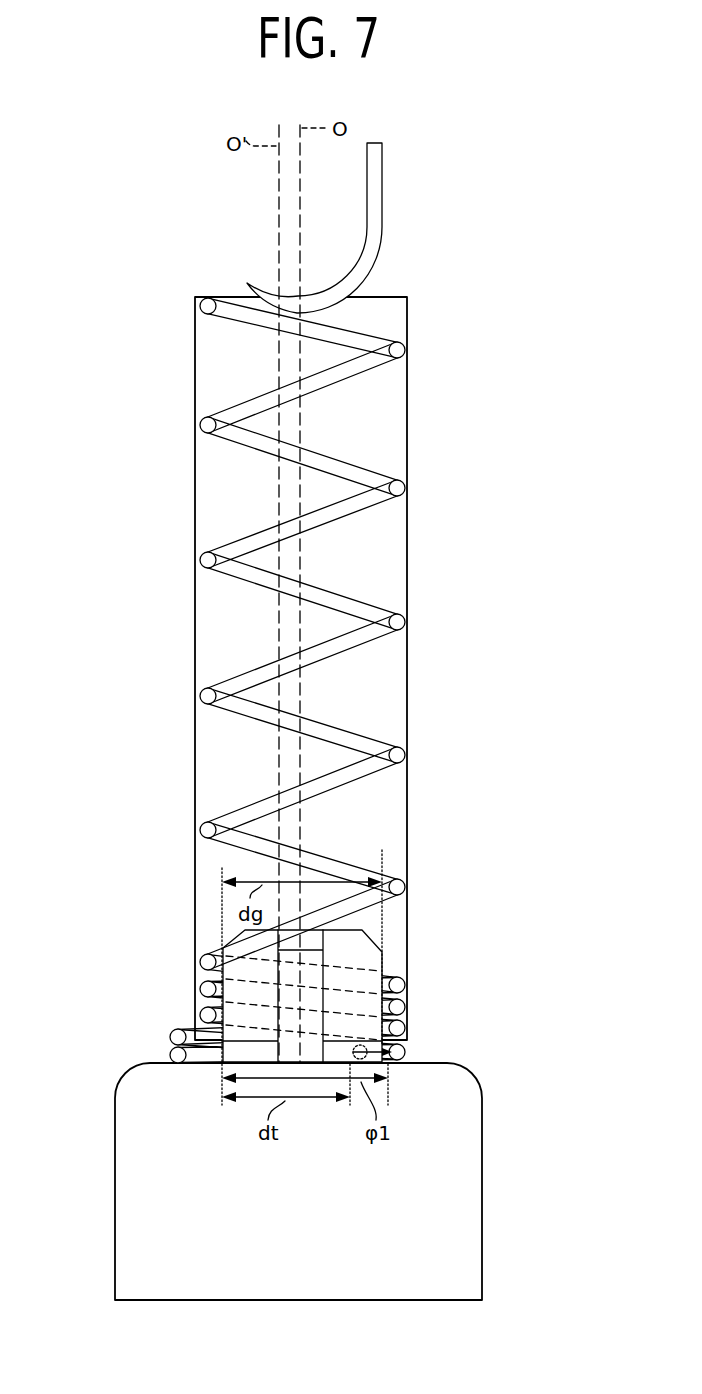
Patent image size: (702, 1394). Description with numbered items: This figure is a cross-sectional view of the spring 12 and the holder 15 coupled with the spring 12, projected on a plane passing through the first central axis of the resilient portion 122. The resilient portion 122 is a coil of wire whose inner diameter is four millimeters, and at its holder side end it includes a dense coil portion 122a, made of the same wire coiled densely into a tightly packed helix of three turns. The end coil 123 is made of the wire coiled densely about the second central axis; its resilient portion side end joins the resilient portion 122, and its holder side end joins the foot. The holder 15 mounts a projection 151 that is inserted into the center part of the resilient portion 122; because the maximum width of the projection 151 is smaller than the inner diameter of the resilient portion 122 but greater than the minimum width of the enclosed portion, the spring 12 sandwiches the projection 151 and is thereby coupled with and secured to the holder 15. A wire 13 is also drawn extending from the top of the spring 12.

The spring 12 is at (445, 343).
The lead wire / hook 13 is at (383, 187).
The resilient portion 122 is at (289, 680).
The dense coil portion 122a is at (408, 972).
The end coil 123 is at (163, 1038).
The projection 151 is at (372, 945).
The holder 15 is at (482, 1185).